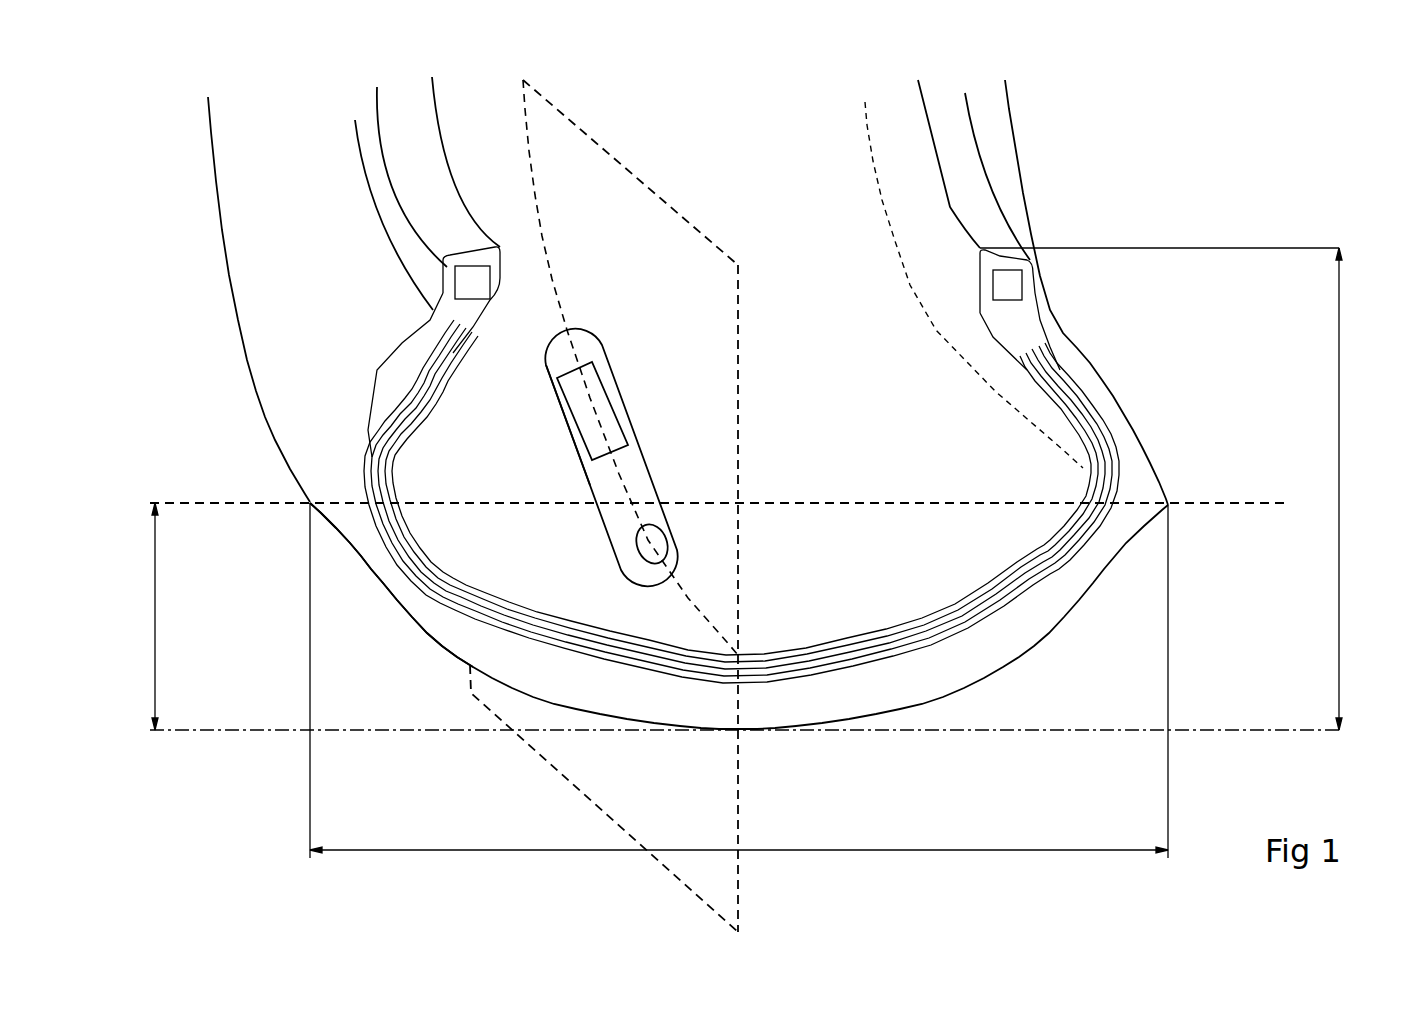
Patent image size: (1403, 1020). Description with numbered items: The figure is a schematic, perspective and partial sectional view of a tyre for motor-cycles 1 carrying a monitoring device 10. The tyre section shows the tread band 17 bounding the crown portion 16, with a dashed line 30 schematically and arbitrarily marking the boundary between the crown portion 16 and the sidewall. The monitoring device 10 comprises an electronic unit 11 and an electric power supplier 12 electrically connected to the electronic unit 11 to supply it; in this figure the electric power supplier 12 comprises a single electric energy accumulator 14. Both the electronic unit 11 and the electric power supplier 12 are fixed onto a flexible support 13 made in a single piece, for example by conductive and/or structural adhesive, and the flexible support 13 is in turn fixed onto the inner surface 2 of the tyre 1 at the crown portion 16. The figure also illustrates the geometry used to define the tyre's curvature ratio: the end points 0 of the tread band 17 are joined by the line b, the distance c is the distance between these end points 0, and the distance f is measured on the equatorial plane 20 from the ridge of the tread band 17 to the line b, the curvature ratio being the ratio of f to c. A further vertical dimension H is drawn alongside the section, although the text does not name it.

The tyre for motor-cycles 1 is at (1165, 110).
The inner surface of the tyre 2 is at (857, 594).
The monitoring device 10 is at (632, 342).
The electronic unit 11 is at (610, 413).
The electric power supplier 12 is at (660, 527).
The flexible support 13 is at (543, 378).
The electric energy accumulator 14 is at (657, 541).
The crown portion 16 is at (670, 708).
The tread band 17 is at (428, 643).
The equatorial plane 20 is at (523, 82).
The dashed line 30 is at (865, 103).
The end points of the tread band 0 is at (310, 502).
The section height H is at (1339, 494).
The distance f is at (155, 613).
The line b is at (1231, 509).
The distance C c is at (724, 849).